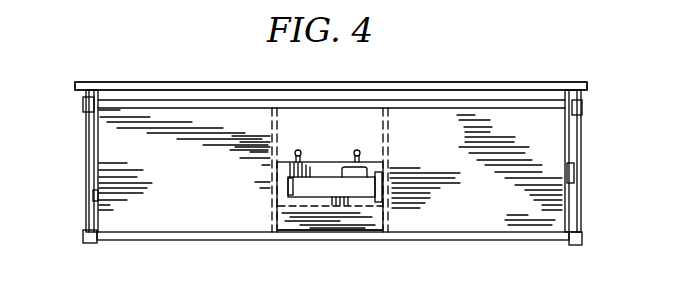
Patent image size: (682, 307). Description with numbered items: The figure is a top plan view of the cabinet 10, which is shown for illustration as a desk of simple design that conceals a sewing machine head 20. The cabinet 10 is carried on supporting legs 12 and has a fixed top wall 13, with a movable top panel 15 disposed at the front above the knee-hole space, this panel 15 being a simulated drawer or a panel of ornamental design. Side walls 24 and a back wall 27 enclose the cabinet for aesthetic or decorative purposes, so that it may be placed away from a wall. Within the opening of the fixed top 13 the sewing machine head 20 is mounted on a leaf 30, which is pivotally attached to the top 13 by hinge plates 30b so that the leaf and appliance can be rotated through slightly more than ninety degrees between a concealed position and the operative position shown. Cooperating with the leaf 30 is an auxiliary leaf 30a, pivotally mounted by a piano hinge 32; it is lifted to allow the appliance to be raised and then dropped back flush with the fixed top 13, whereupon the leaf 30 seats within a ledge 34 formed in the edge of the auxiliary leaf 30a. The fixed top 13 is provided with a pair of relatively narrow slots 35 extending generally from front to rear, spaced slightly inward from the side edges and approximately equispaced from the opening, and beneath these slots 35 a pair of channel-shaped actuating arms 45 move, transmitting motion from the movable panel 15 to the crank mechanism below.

The cabinet 10 is at (143, 76).
The legs 12 is at (90, 244).
The fixed top wall 13 is at (157, 197).
The movable top panel 15 is at (487, 86).
The sewing machine head 20 is at (310, 187).
The side walls 24 is at (86, 210).
The back wall 27 is at (433, 104).
The leaf 30 is at (280, 202).
The auxiliary leaf 30a is at (326, 224).
The hinge plates 30b is at (357, 150).
The piano hinge 32 is at (367, 227).
The ledge 34 is at (375, 208).
The slots 35 is at (93, 195).
The actuating arms 45 is at (95, 128).